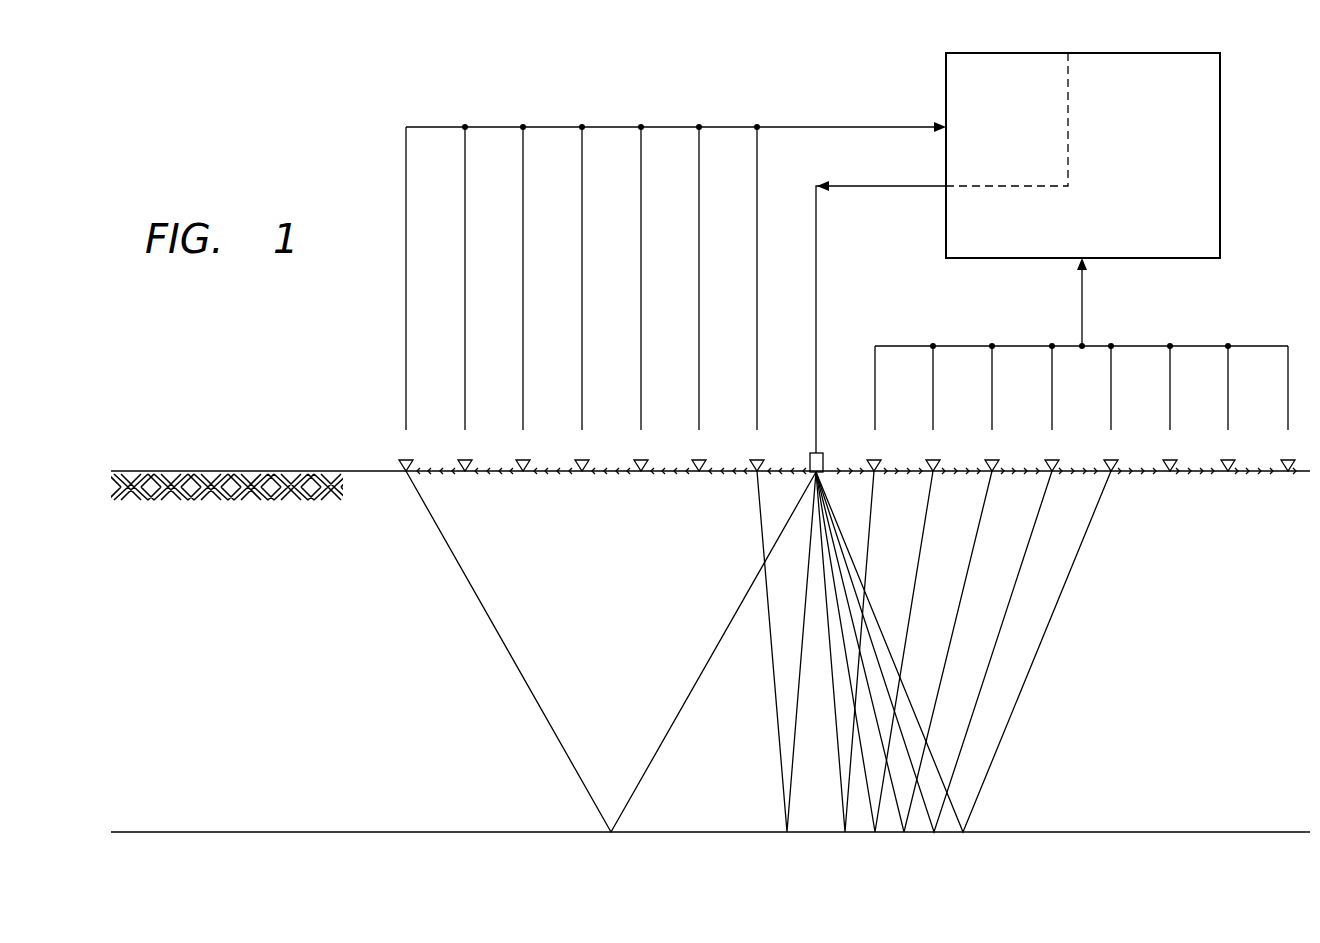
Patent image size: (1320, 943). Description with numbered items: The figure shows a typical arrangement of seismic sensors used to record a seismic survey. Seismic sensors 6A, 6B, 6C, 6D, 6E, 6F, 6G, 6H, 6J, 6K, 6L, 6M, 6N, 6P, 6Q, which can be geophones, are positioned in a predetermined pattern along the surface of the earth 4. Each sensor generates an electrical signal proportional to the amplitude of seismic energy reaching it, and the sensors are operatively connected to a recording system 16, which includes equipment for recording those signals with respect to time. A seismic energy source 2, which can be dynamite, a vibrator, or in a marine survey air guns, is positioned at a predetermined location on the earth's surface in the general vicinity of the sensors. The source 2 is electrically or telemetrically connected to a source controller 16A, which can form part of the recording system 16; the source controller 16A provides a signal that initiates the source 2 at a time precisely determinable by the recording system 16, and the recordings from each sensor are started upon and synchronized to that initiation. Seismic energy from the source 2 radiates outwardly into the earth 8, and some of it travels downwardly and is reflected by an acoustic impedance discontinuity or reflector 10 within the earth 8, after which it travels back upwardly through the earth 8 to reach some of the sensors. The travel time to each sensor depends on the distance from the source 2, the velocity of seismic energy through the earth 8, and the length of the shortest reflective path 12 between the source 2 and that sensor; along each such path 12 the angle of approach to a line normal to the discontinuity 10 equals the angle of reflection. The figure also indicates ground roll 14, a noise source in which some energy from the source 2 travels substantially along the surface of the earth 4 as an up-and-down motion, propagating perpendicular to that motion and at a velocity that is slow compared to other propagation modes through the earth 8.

The seismic energy source 2 is at (812, 453).
The surface of the earth 4 is at (785, 471).
The seismic sensor 6A is at (876, 408).
The seismic sensor 6B is at (933, 408).
The seismic sensor 6C is at (992, 408).
The seismic sensor 6D is at (1052, 408).
The seismic sensor 6E is at (1111, 408).
The seismic sensor 6F is at (1169, 408).
The seismic sensor 6G is at (1228, 408).
The seismic sensor 6H is at (1287, 408).
The seismic sensor 6J is at (757, 299).
The seismic sensor 6K is at (699, 299).
The seismic sensor 6L is at (640, 299).
The seismic sensor 6M is at (581, 299).
The seismic sensor 6N is at (522, 299).
The seismic sensor 6P is at (465, 299).
The seismic sensor 6Q is at (406, 299).
The earth 8 is at (620, 596).
The reflector 10 is at (290, 831).
The shortest reflective path 12 is at (602, 818).
The ground roll 14 is at (668, 455).
The recording system 16 is at (1160, 52).
The source controller 16A is at (960, 158).